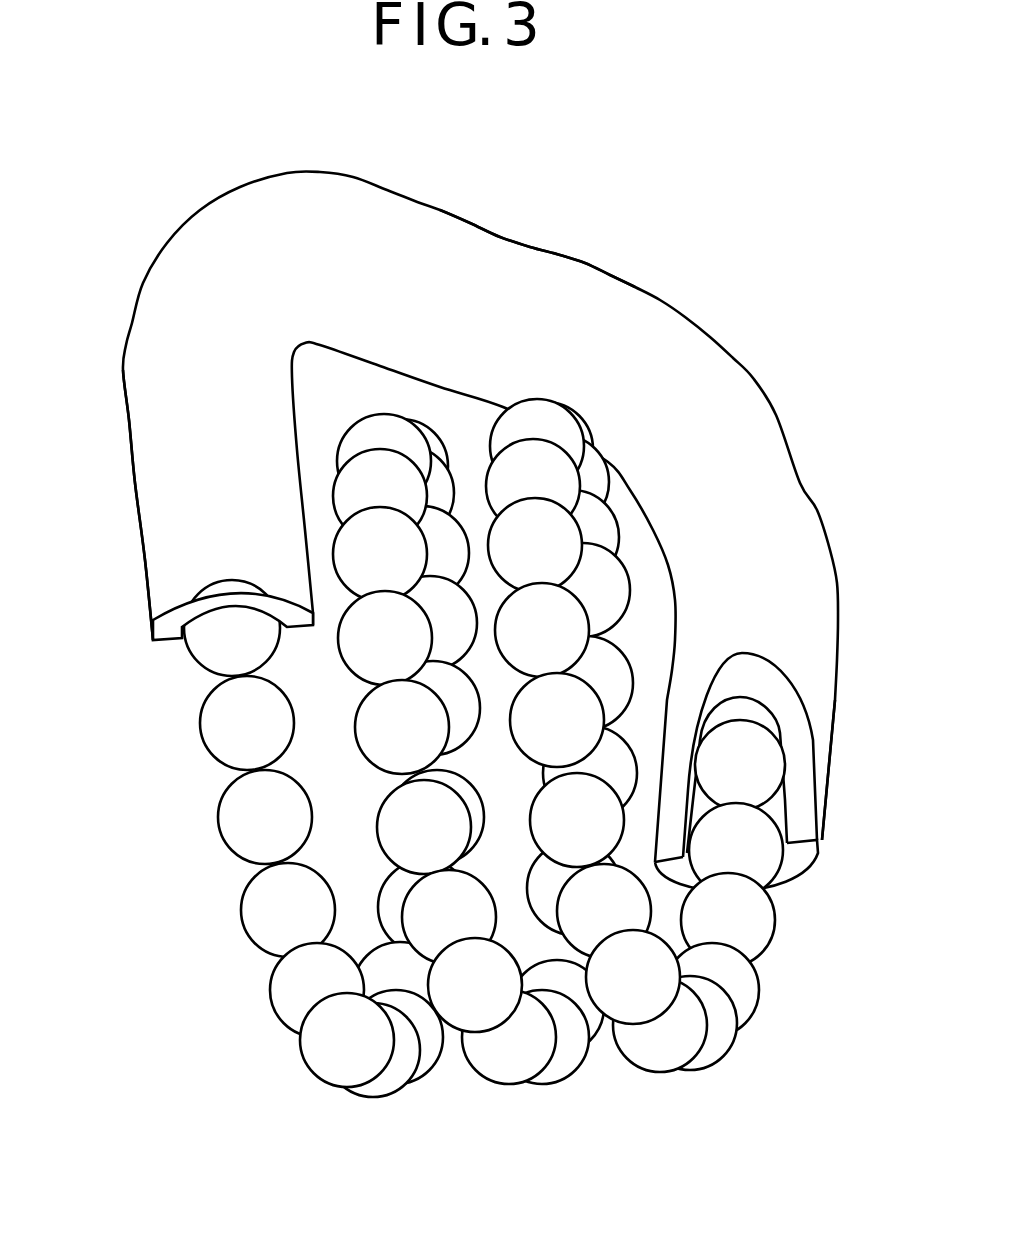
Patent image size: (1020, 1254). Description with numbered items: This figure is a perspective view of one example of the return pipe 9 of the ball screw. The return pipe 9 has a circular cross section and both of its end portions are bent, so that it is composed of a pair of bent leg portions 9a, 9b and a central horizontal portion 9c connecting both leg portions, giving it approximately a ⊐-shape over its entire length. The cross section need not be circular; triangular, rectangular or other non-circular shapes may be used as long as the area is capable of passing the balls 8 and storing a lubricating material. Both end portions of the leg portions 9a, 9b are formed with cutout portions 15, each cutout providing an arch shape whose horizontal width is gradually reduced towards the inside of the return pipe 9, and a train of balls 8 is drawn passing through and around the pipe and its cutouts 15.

The balls / ball chain 8 is at (410, 749).
The return pipe 9 is at (757, 408).
The bent leg portion 9a is at (820, 667).
The bent leg portion 9b is at (152, 492).
The central horizontal portion 9c is at (498, 242).
The cutout portion 15 is at (806, 767).